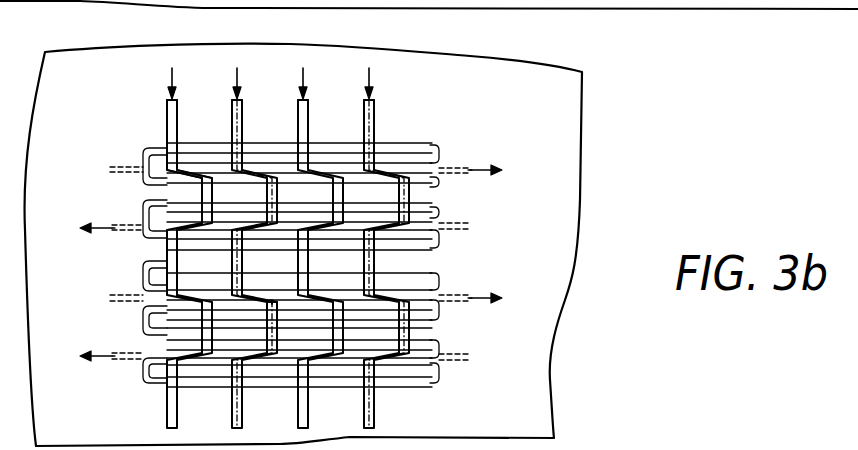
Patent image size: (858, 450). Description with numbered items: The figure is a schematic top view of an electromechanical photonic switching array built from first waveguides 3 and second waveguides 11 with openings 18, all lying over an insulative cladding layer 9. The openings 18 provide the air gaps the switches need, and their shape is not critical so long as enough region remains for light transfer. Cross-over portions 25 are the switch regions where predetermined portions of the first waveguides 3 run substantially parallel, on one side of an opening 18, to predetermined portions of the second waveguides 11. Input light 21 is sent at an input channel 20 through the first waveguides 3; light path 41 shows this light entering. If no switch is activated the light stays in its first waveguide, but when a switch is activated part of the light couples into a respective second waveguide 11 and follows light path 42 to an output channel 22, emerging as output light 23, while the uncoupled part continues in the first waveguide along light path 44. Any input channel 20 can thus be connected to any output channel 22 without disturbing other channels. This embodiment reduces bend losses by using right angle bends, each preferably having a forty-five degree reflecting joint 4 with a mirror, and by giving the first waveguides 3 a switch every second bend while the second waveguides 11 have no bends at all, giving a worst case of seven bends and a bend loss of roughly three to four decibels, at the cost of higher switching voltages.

The first waveguide 3 is at (167, 137).
The 45 degree reflecting joint 4 is at (343, 242).
The insulative cladding layer 9 is at (570, 122).
The second waveguide 11 is at (120, 168).
The opening 18 is at (437, 147).
The input channel 20 is at (167, 100).
The input light 21 is at (170, 73).
The output channel 22 is at (473, 170).
The output light 23 is at (497, 170).
The cross-over portion 25 is at (271, 157).
The light path 41 is at (232, 140).
The light path 42 is at (185, 222).
The light path 44 is at (274, 328).